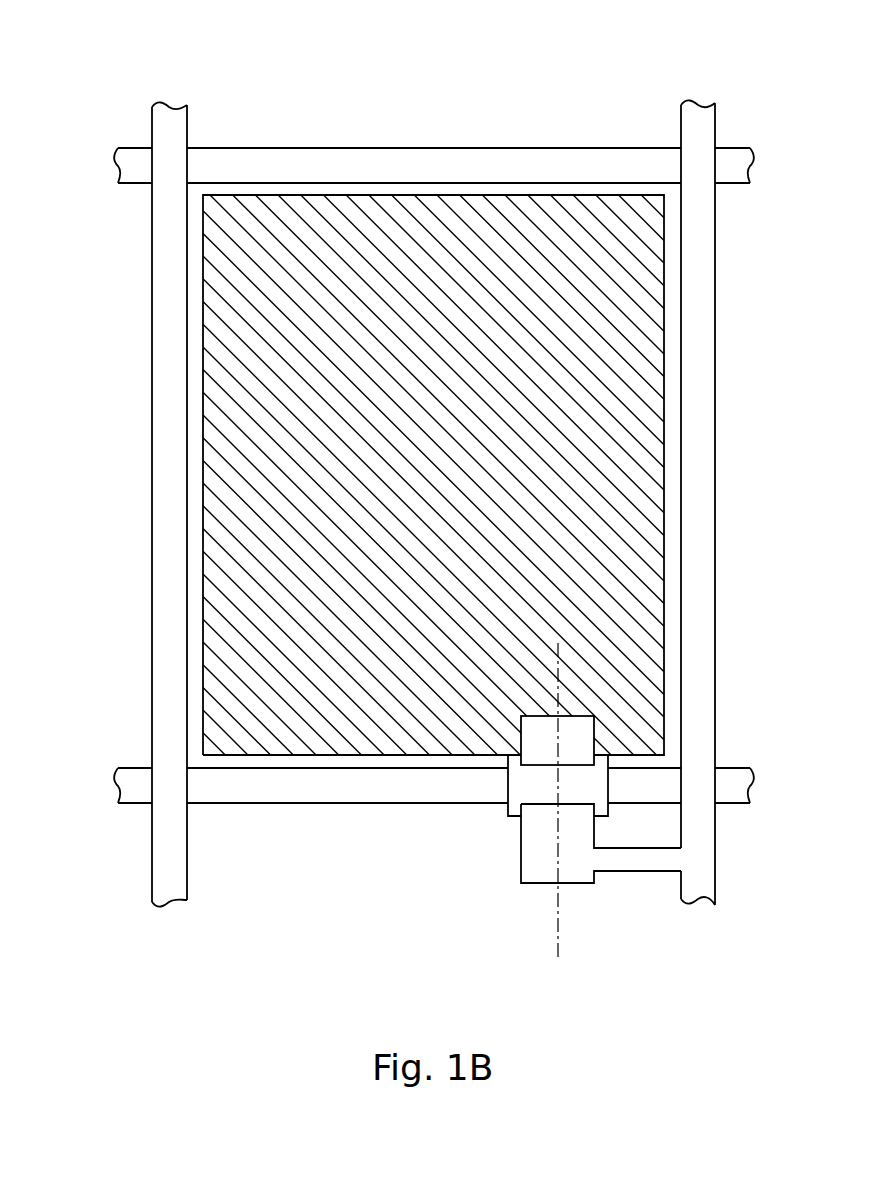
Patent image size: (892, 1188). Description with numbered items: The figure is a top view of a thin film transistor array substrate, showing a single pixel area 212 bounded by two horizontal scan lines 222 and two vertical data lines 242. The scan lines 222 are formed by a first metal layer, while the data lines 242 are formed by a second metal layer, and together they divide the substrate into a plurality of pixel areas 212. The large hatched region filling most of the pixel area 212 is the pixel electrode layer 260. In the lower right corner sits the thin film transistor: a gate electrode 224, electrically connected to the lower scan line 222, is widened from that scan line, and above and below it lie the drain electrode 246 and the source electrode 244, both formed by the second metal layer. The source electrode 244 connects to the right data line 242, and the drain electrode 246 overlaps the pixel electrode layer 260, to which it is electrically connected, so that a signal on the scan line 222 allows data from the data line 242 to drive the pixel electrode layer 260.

The pixel area 212 is at (244, 105).
The scan line 222 is at (738, 171).
The gate electrode 224 is at (592, 787).
The data line 242 is at (707, 126).
The source electrode 244 is at (580, 859).
The drain electrode 246 is at (585, 733).
The pixel electrode layer 260 is at (253, 420).